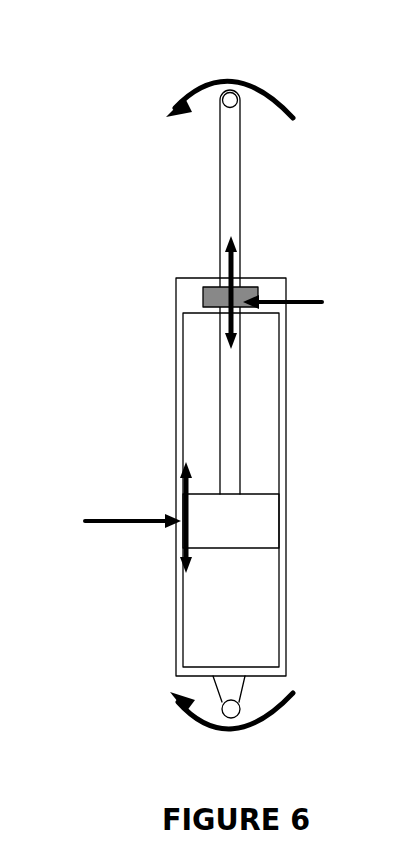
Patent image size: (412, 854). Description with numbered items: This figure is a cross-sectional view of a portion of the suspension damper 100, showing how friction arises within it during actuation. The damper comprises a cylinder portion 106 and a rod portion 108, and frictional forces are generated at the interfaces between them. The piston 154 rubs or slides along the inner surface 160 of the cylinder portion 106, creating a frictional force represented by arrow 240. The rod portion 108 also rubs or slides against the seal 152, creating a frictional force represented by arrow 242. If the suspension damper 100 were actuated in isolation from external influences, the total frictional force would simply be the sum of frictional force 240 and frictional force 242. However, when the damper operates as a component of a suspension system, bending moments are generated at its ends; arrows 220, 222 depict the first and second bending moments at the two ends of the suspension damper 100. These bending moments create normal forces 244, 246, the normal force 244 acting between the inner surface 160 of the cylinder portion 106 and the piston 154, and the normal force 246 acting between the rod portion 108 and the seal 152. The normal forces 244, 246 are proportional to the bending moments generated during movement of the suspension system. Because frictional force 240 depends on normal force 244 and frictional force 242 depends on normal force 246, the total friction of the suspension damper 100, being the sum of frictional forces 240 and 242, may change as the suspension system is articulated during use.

The suspension damper 100 is at (200, 404).
The cylinder portion 106 is at (283, 607).
The rod portion 108 is at (241, 173).
The seal 152 is at (206, 288).
The piston 154 is at (279, 505).
The inner surface 160 is at (277, 425).
The arrow depicting bending moment M1 220 is at (283, 93).
The arrow depicting bending moment M2 222 is at (273, 718).
The frictional force 240 is at (183, 478).
The frictional force 242 is at (242, 259).
The normal force 244 is at (109, 524).
The normal force 246 is at (307, 304).